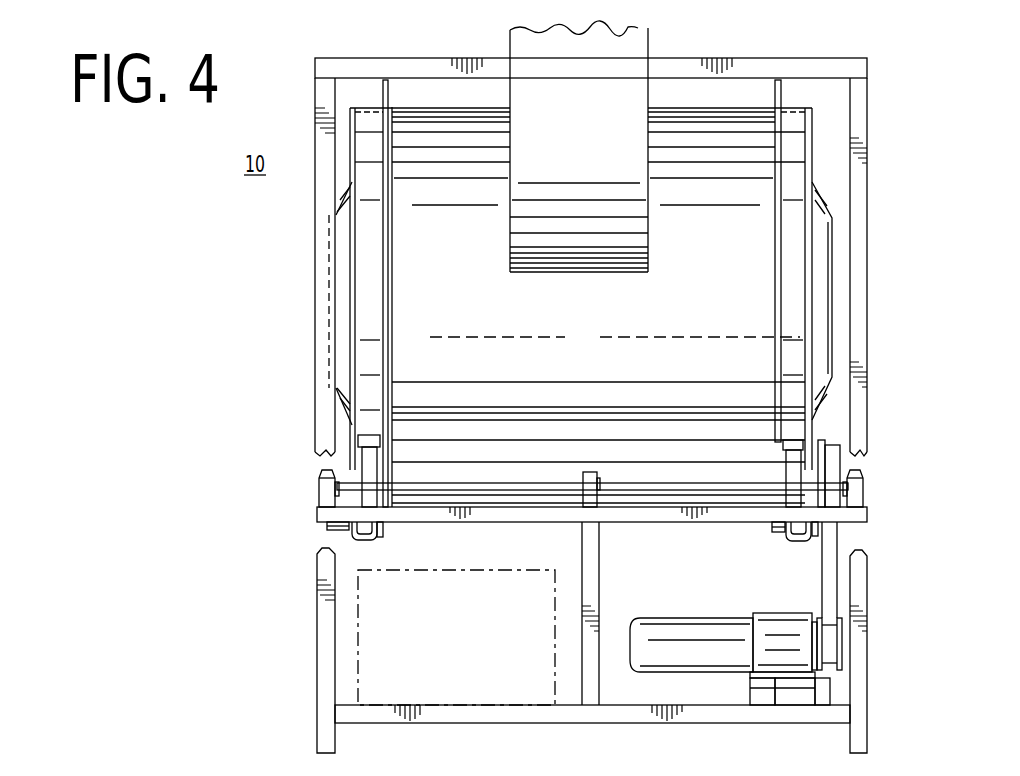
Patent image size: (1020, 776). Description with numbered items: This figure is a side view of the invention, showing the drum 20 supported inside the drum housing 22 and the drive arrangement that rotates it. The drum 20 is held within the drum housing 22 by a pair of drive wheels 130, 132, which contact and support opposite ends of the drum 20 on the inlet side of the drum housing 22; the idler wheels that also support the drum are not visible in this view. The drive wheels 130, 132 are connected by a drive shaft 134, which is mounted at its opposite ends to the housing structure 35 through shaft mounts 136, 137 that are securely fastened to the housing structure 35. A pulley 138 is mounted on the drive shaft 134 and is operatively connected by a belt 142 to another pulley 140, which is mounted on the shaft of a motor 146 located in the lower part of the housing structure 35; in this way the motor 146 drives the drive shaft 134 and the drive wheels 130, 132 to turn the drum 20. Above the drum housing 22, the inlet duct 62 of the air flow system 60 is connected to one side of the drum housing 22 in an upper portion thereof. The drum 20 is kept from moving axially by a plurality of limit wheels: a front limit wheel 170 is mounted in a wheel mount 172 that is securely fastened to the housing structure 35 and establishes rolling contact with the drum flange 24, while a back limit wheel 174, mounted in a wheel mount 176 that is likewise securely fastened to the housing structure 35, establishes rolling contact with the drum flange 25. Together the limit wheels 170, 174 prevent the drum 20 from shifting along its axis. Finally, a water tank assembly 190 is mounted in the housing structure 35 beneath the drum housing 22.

The drum 20 is at (370, 320).
The drum housing 22 is at (497, 314).
The drum flange 24 is at (388, 88).
The drum flange 25 is at (781, 96).
The housing structure 35 is at (318, 656).
The air flow system 60 is at (662, 36).
The inlet duct 62 is at (638, 192).
The drive wheel 130 is at (370, 460).
The drive wheel 132 is at (795, 445).
The drive shaft 134 is at (534, 488).
The shaft mount 136 is at (322, 487).
The shaft mount 137 is at (852, 490).
The pulley 138 is at (835, 462).
The pulley 140 is at (842, 650).
The belt 142 is at (832, 556).
The motor 146 is at (683, 636).
The front limit wheel 170 is at (388, 530).
The wheel mount 172 is at (348, 536).
The back limit wheel 174 is at (778, 534).
The wheel mount 176 is at (797, 546).
The water tank assembly 190 is at (442, 688).